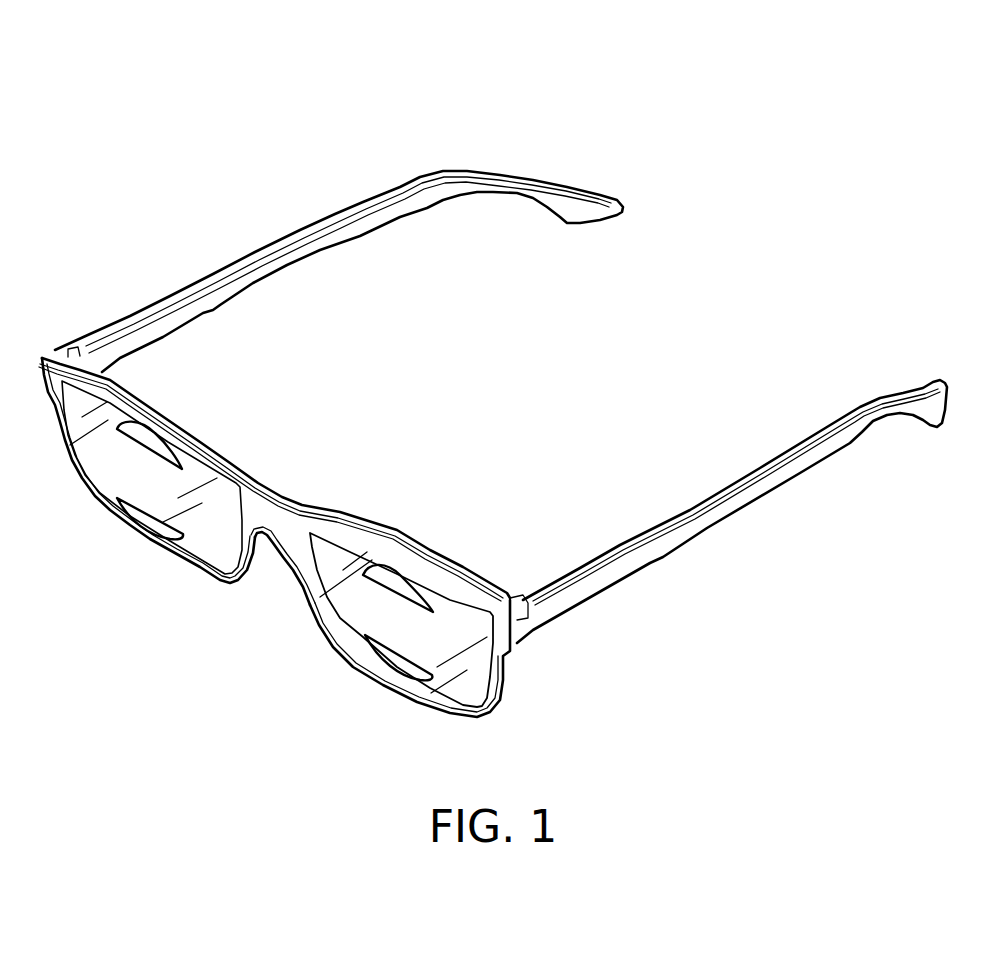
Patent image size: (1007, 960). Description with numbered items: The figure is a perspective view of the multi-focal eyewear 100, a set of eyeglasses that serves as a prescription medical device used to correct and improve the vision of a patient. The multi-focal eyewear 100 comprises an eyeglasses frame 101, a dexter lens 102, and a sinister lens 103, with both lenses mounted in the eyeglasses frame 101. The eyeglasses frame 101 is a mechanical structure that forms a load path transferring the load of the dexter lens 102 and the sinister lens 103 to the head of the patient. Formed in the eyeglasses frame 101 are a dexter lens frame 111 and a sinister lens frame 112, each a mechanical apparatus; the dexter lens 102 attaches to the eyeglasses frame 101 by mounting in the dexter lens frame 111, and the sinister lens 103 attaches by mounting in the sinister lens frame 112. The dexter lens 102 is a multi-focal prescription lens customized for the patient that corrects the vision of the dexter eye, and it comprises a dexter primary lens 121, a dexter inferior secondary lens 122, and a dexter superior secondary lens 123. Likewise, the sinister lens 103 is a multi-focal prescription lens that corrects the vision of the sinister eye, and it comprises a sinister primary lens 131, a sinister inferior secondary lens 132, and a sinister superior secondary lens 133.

The multi-focal eyewear 100 is at (240, 112).
The eyeglasses frame 101 is at (508, 163).
The dexter lens 102 is at (213, 484).
The sinister lens 103 is at (330, 547).
The dexter lens frame 111 is at (243, 578).
The sinister lens frame 112 is at (345, 646).
The dexter primary lens 121 is at (105, 473).
The dexter inferior secondary lens 122 is at (152, 527).
The dexter superior secondary lens 123 is at (147, 443).
The sinister primary lens 131 is at (450, 633).
The sinister inferior secondary lens 132 is at (407, 670).
The sinister superior secondary lens 133 is at (398, 583).